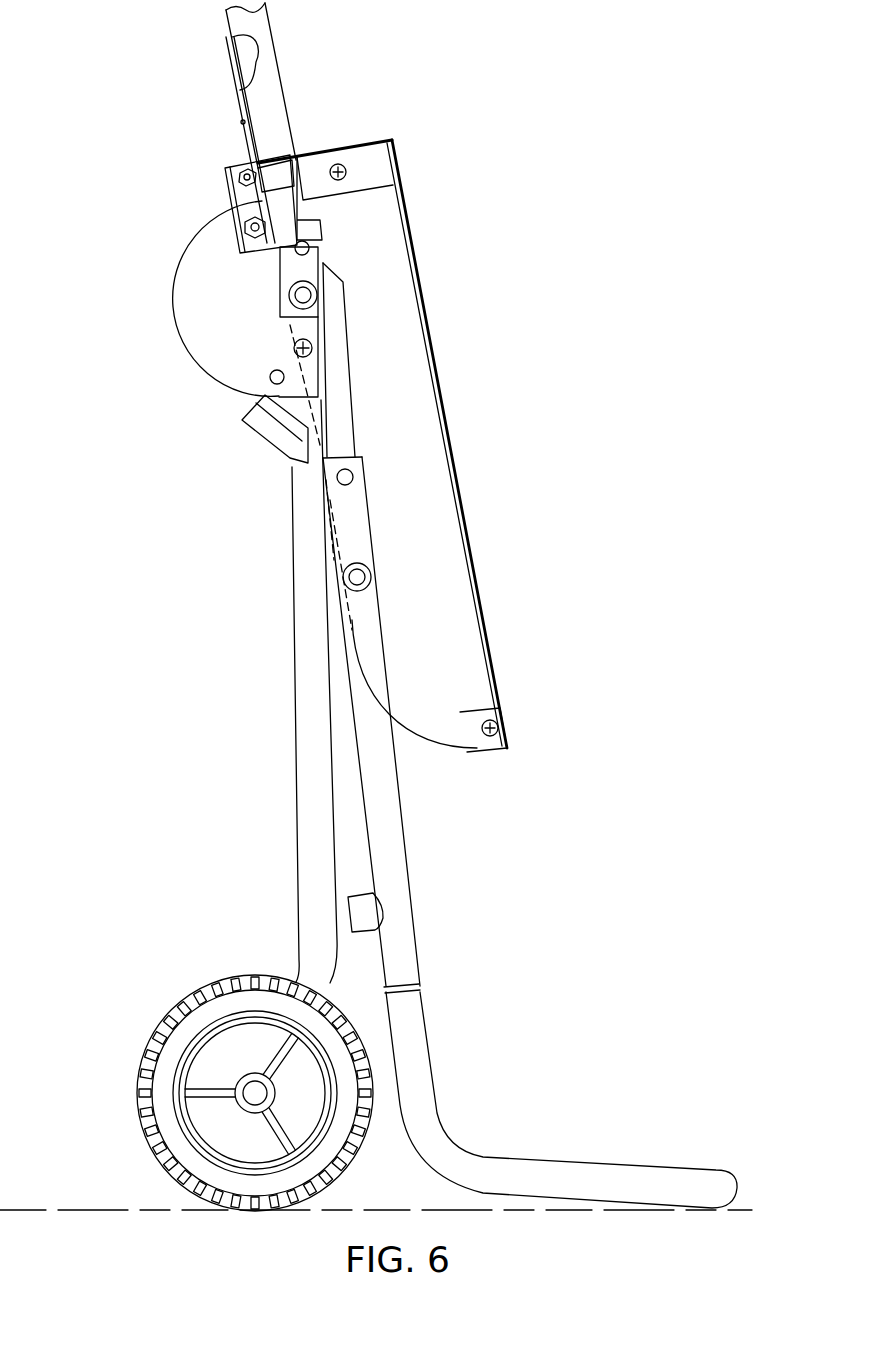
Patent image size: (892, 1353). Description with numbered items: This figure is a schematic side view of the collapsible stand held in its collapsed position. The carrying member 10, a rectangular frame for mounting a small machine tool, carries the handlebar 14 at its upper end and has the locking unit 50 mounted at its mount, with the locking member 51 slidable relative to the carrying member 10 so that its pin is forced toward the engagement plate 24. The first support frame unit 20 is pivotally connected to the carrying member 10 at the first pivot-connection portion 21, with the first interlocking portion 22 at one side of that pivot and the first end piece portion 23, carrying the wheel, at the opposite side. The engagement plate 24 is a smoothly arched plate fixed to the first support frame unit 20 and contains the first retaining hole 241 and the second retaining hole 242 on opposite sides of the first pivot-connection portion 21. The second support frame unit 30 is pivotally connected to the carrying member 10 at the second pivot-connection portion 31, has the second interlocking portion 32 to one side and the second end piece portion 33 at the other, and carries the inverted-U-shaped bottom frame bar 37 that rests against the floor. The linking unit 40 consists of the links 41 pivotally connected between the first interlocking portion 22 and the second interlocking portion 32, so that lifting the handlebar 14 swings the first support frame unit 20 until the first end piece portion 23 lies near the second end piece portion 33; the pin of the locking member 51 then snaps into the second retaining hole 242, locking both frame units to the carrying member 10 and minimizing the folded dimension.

The carrying member 10 is at (446, 379).
The handlebar 14 is at (273, 120).
The first support frame unit 20 is at (282, 562).
The first pivot-connection portion 21 is at (302, 295).
The first interlocking portion 22 is at (309, 248).
The first end piece portion 23 is at (293, 980).
The engagement plate 24 is at (217, 283).
The first retaining hole 241 is at (270, 378).
The second retaining hole 242 is at (245, 220).
The locking member 51 is at (261, 204).
The second support frame unit 30 is at (420, 870).
The second pivot-connection portion 31 is at (362, 576).
The second interlocking portion 32 is at (352, 473).
The second end piece portion 33 is at (403, 968).
The bottom frame bar 37 is at (612, 1170).
The linking unit 40 is at (350, 276).
The link 41 is at (343, 354).
The locking unit 50 is at (225, 105).